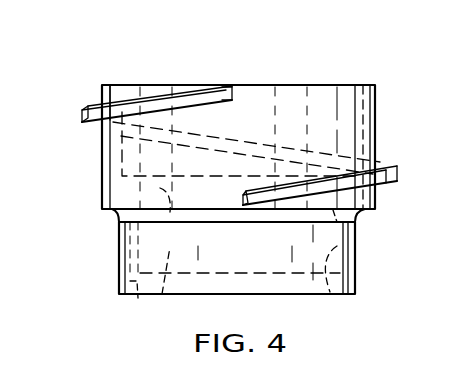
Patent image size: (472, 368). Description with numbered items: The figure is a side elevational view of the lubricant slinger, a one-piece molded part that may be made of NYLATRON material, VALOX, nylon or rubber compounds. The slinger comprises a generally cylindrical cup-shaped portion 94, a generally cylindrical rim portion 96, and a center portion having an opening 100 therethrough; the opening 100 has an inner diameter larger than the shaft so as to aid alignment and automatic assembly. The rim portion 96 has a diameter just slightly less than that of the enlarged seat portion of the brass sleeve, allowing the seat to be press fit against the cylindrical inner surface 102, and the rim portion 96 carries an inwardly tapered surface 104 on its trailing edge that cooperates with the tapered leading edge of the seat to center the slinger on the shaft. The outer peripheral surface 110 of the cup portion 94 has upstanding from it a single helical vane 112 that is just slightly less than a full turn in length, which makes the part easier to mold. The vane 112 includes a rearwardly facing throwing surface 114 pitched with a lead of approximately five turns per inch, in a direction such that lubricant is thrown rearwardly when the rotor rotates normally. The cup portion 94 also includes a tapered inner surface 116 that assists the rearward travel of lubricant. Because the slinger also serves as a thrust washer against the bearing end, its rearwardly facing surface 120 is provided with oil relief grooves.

The cup-shaped portion 94 is at (372, 145).
The rim portion 96 is at (360, 268).
The opening 100 is at (162, 294).
The cylindrical inner surface 102 is at (331, 292).
The inwardly tapered surface 104 is at (130, 281).
The outer peripheral surface 110 is at (378, 101).
The helical vane 112 is at (186, 98).
The throwing surface 114 is at (208, 105).
The tapered inner surface 116 is at (117, 92).
The rearwardly facing surface 120 is at (326, 121).